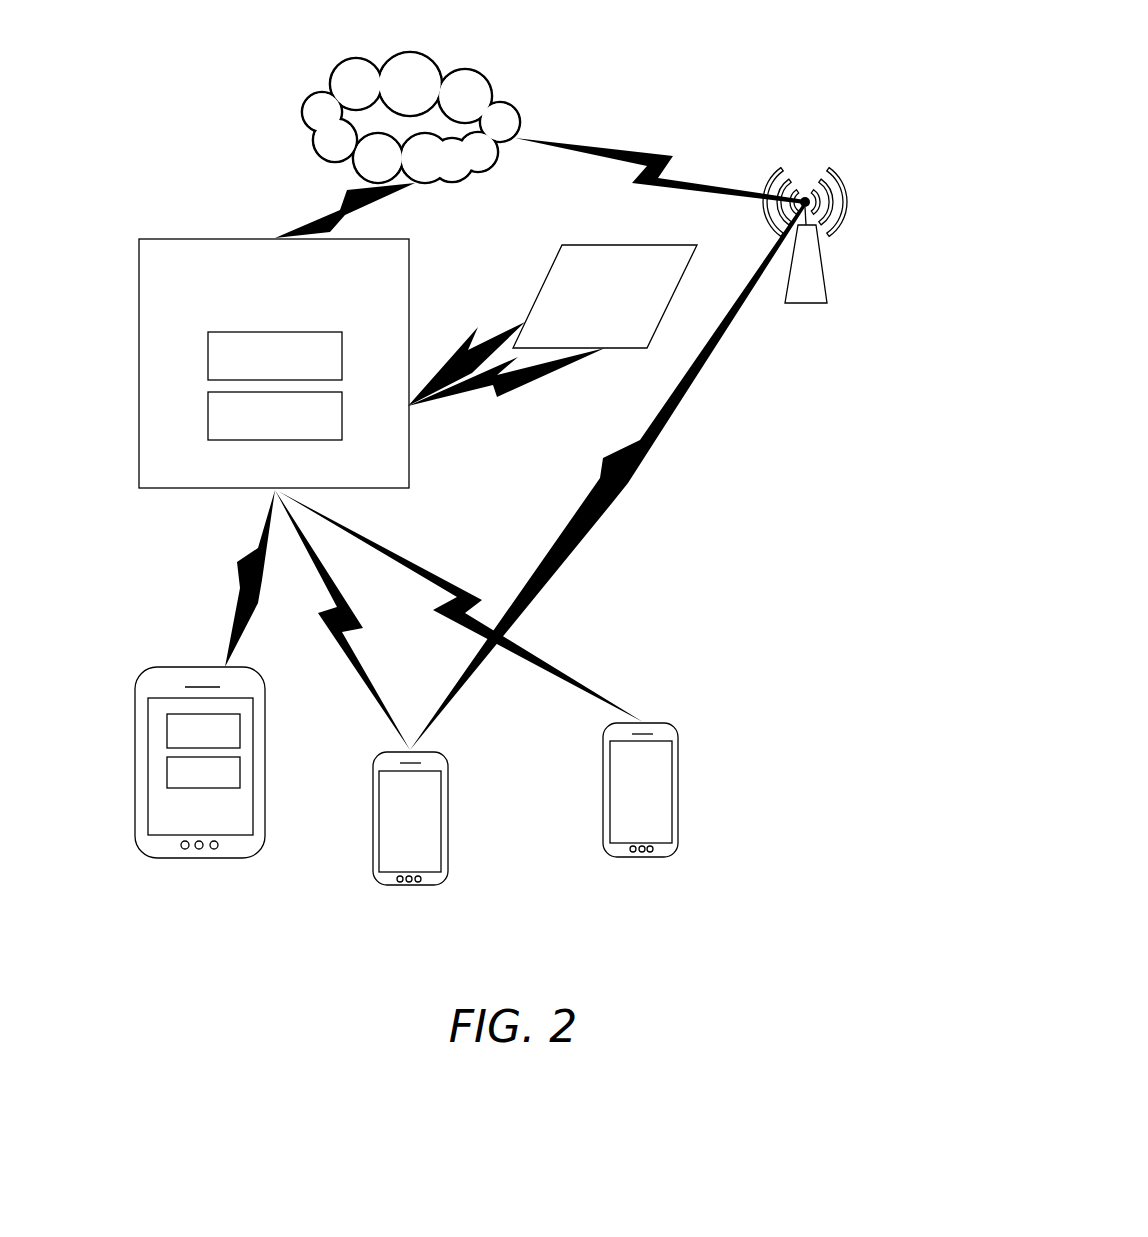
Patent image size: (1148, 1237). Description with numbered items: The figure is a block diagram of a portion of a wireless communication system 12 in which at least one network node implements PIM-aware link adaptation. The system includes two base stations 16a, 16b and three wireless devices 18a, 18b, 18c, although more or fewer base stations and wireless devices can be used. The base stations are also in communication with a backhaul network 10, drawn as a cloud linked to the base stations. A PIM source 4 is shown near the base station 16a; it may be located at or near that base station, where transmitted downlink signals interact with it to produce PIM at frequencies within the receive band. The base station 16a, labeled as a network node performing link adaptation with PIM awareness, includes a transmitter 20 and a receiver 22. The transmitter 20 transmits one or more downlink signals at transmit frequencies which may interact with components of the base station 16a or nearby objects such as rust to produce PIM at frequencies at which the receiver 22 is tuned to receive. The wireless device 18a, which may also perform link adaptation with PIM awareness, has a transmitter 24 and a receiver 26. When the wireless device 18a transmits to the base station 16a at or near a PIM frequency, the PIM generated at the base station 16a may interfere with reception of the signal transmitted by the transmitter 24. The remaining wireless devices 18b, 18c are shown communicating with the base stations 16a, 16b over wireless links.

The PIM source 4 is at (645, 278).
The backhaul network 10 is at (429, 158).
The wireless communication system 12 is at (705, 72).
The base station 16a is at (322, 363).
The base station 16b is at (826, 288).
The wireless device 18a is at (221, 762).
The wireless device 18b is at (448, 818).
The wireless device 18c is at (678, 788).
The transmitter 20 is at (208, 356).
The receiver 22 is at (208, 416).
The transmitter 24 is at (167, 730).
The receiver 26 is at (167, 770).